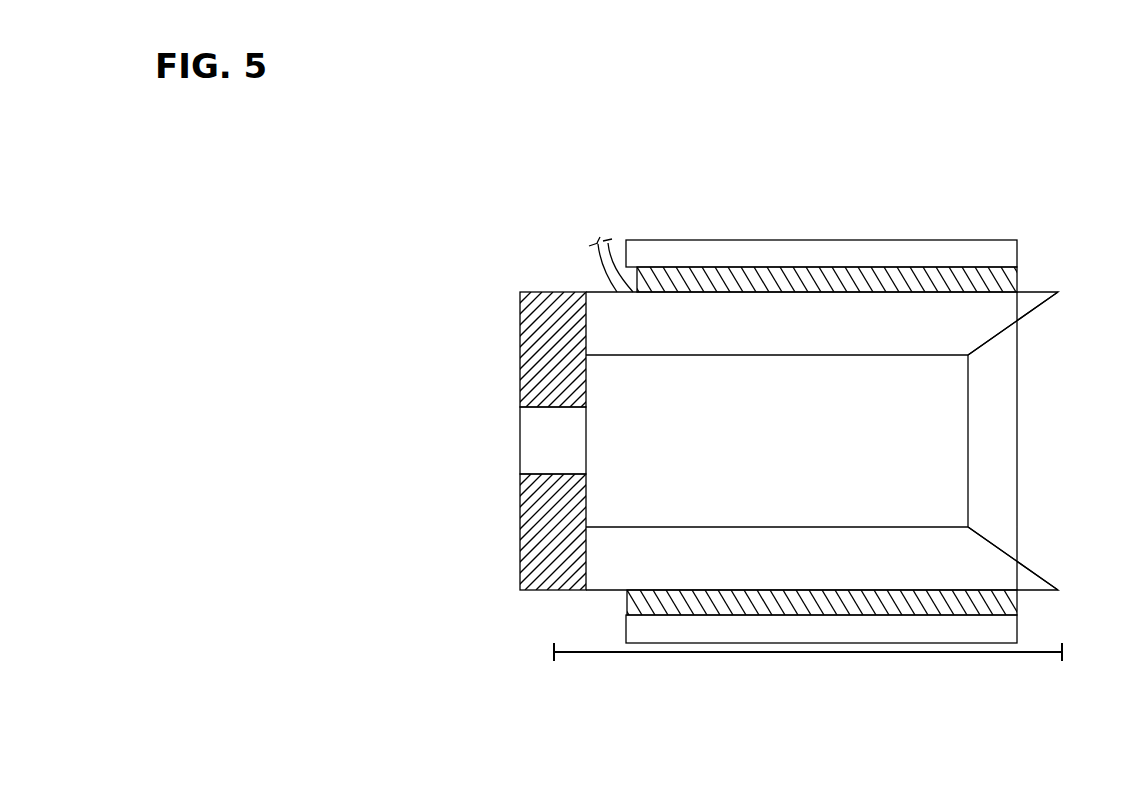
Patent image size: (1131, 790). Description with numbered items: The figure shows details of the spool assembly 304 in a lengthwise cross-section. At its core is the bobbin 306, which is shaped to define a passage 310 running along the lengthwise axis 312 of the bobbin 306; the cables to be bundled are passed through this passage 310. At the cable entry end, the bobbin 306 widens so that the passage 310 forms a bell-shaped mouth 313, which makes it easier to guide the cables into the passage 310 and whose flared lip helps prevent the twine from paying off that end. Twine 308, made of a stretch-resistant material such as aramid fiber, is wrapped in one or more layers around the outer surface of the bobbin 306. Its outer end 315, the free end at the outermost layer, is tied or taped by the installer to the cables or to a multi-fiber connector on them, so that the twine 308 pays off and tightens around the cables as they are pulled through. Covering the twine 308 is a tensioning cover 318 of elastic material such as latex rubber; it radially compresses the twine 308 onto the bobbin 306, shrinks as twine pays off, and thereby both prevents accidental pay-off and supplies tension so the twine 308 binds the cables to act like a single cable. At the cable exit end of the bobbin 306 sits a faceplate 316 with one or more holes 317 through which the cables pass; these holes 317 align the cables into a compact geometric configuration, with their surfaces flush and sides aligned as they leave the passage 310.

The spool assembly 304 is at (866, 142).
The bobbin 306 is at (605, 305).
The twine 308 is at (1005, 282).
The passage 310 is at (955, 430).
The lengthwise axis 312 is at (808, 664).
The bell-shaped mouth 313 is at (998, 335).
The outer end of the twine 315 is at (609, 245).
The faceplate 316 is at (531, 363).
The holes 317 is at (535, 442).
The tensioning cover 318 is at (908, 250).